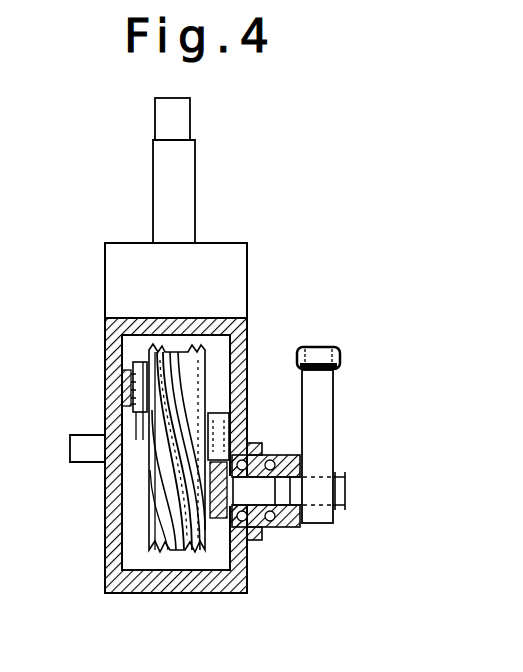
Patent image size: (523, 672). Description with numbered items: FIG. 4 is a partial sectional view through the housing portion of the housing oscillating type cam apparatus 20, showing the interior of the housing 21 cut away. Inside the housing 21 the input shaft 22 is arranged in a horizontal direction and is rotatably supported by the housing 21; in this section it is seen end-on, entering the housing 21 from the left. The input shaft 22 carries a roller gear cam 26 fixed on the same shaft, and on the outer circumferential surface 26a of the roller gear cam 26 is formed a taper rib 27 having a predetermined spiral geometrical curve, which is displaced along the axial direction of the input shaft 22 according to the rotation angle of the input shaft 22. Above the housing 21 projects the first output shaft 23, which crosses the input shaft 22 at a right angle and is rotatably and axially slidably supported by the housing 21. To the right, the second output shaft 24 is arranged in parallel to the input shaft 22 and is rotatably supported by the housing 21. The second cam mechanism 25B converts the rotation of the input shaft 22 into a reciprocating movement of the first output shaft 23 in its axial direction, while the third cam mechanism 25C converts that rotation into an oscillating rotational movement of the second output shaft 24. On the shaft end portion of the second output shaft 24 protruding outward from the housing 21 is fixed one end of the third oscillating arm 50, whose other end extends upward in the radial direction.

The housing oscillating type cam apparatus 20 is at (333, 240).
The housing 21 is at (105, 337).
The input shaft 22 is at (70, 443).
The first output shaft 23 is at (187, 157).
The second output shaft 24 is at (346, 487).
The second cam mechanism 25B is at (122, 372).
The third cam mechanism 25C is at (236, 410).
The roller gear cam 26 is at (166, 537).
The outer circumferential surface 26a is at (178, 523).
The taper rib 27 is at (162, 550).
The third oscillating arm 50 is at (331, 397).